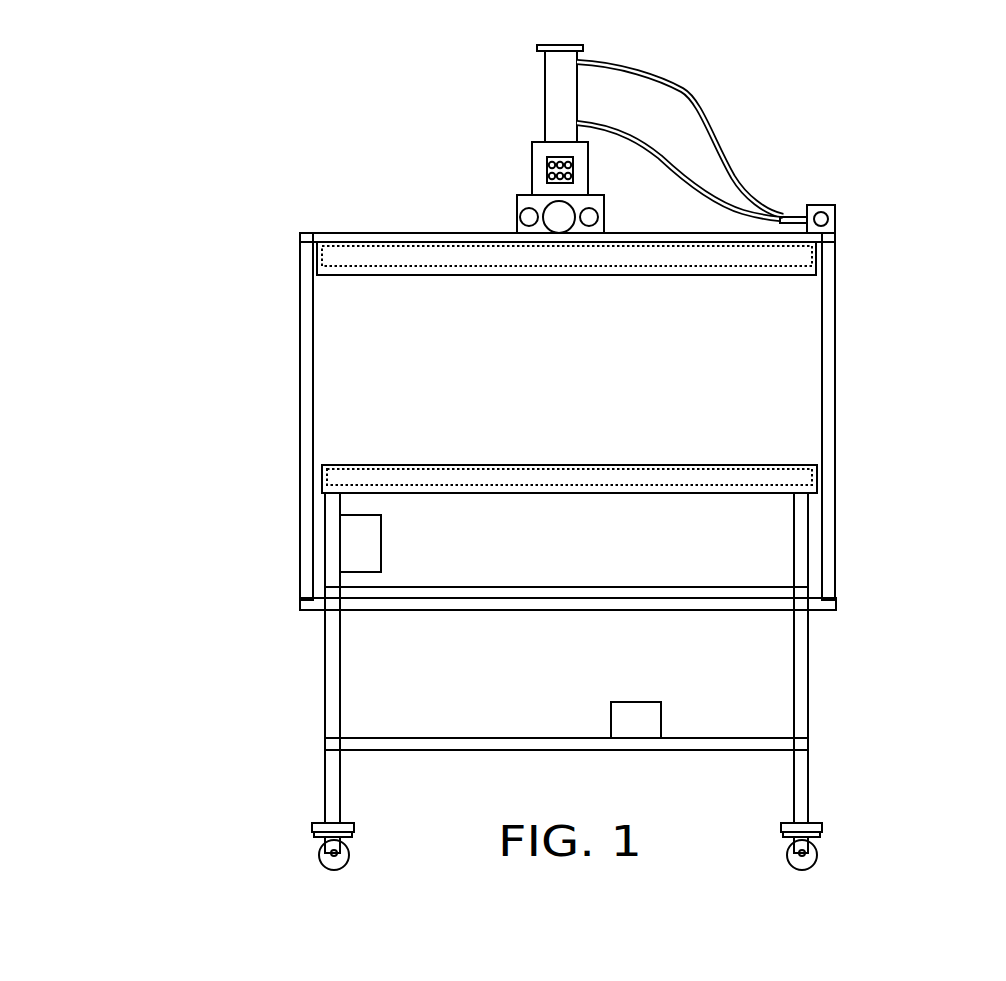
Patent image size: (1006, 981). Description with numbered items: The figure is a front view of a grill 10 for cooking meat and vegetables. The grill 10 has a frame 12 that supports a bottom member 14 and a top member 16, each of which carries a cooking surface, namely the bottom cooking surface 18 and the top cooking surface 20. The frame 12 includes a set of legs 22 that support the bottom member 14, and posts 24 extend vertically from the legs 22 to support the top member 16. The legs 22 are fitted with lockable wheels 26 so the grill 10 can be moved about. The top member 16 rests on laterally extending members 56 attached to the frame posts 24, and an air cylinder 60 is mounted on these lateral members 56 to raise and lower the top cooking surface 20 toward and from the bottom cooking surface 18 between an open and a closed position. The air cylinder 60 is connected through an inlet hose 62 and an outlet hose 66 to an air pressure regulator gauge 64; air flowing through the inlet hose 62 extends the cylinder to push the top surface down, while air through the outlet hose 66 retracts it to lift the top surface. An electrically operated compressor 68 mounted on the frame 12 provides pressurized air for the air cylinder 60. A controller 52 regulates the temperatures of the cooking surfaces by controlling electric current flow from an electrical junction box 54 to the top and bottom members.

The grill 10 is at (857, 128).
The frame 12 is at (297, 628).
The bottom member 14 is at (374, 466).
The top member 16 is at (449, 277).
The cooking surface 18 is at (508, 468).
The cooking surface 20 is at (697, 265).
The legs 22 is at (812, 678).
The posts 24 is at (836, 432).
The lockable wheels 26 is at (820, 853).
The controller 52 is at (531, 167).
The electrical junction box 54 is at (383, 542).
The laterally extending members 56 is at (357, 232).
The air cylinder 60 is at (544, 85).
The inlet hose 62 is at (688, 90).
The air pressure regulator gauge 64 is at (840, 203).
The air outlet hose 66 is at (660, 157).
The compressor 68 is at (636, 701).